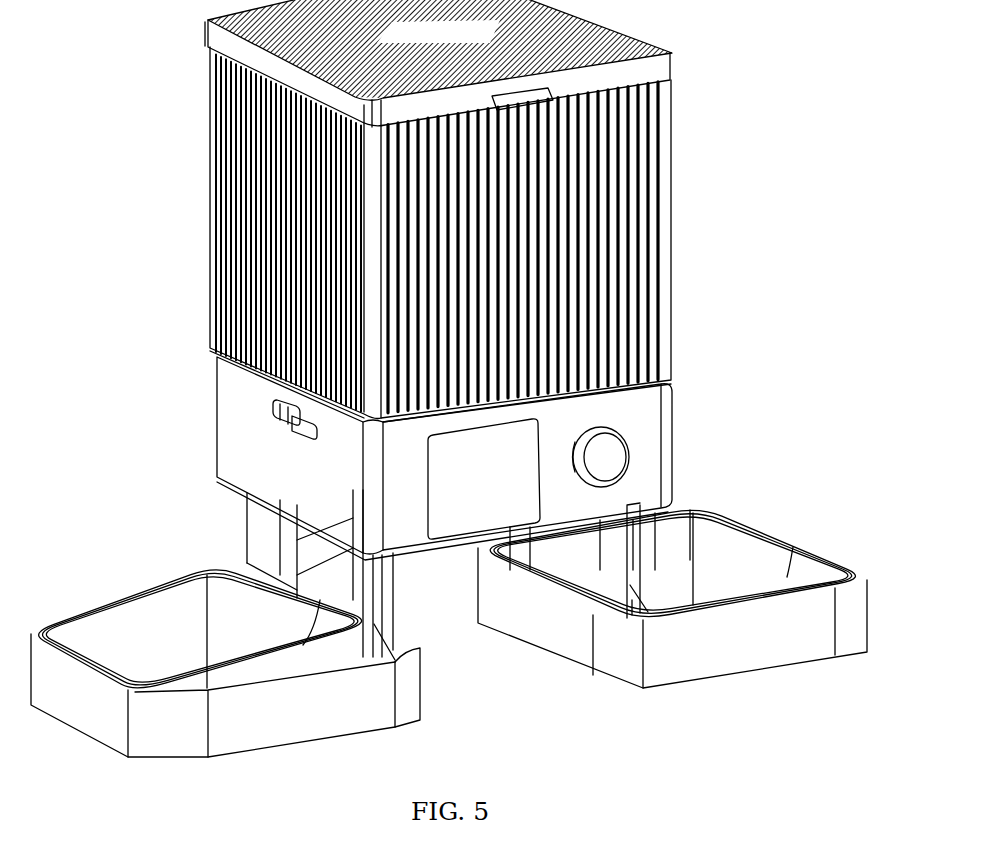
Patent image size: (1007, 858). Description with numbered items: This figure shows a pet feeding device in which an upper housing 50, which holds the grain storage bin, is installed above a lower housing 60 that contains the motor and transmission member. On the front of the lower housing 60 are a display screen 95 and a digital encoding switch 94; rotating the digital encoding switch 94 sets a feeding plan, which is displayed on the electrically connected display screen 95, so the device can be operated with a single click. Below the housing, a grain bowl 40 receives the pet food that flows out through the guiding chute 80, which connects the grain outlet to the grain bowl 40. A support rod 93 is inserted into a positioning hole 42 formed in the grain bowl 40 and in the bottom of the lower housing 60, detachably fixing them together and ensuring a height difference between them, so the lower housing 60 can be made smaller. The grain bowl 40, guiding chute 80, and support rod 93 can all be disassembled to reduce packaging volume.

The upper housing 50 is at (597, 218).
The lower housing 60 is at (648, 413).
The display screen 95 is at (440, 497).
The digital encoding switch 94 is at (605, 460).
The guiding chute 80 is at (333, 568).
The grain bowl 40 is at (717, 558).
The positioning hole 42 is at (640, 600).
The support rod 93 is at (648, 613).